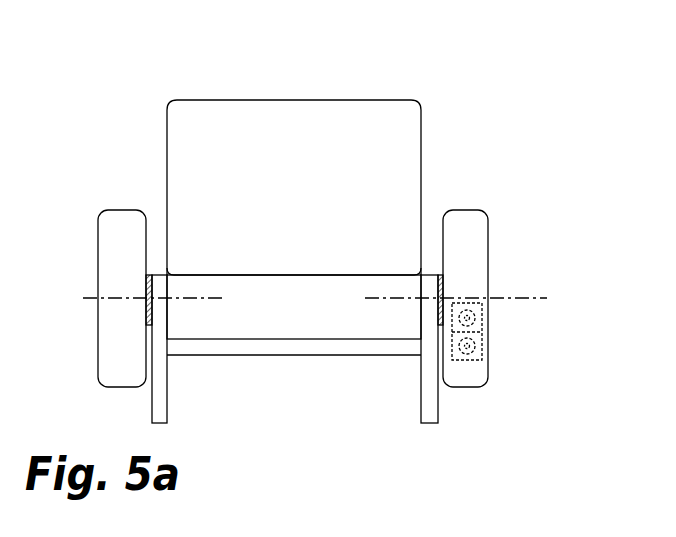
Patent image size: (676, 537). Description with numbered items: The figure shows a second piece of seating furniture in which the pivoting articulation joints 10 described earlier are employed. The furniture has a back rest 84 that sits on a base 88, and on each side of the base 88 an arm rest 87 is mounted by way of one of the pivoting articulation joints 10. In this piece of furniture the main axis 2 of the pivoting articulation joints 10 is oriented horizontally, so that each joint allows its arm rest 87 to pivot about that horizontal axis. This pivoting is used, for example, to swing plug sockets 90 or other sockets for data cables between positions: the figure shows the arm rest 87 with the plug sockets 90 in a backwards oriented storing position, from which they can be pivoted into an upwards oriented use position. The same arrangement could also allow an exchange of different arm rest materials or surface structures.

The main axis 2 is at (518, 297).
The pivoting articulation joint 10 is at (442, 293).
The back rest 84 is at (238, 142).
The arm rest 87 is at (465, 242).
The base 88 is at (322, 343).
The plug sockets 90 is at (482, 323).